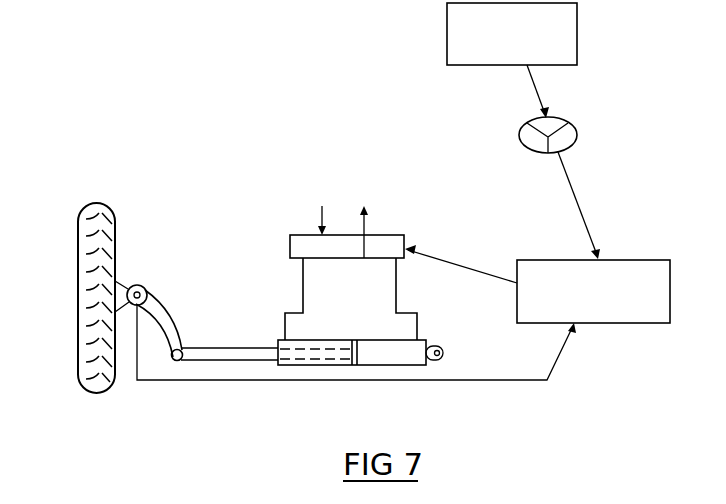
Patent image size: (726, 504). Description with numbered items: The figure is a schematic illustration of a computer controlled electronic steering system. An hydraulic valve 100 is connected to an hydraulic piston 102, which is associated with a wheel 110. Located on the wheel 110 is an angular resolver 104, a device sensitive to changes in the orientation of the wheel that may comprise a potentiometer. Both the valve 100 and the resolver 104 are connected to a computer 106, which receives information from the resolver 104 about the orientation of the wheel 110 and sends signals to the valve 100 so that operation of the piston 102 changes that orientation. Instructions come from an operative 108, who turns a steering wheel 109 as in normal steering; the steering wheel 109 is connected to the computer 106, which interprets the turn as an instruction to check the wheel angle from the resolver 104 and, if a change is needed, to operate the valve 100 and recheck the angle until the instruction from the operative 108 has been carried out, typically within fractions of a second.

The hydraulic valve 100 is at (400, 237).
The hydraulic piston 102 is at (267, 361).
The angular resolver 104 is at (140, 284).
The computer 106 is at (637, 323).
The operative 108 is at (577, 32).
The steering wheel 109 is at (578, 133).
The wheel 110 is at (92, 203).